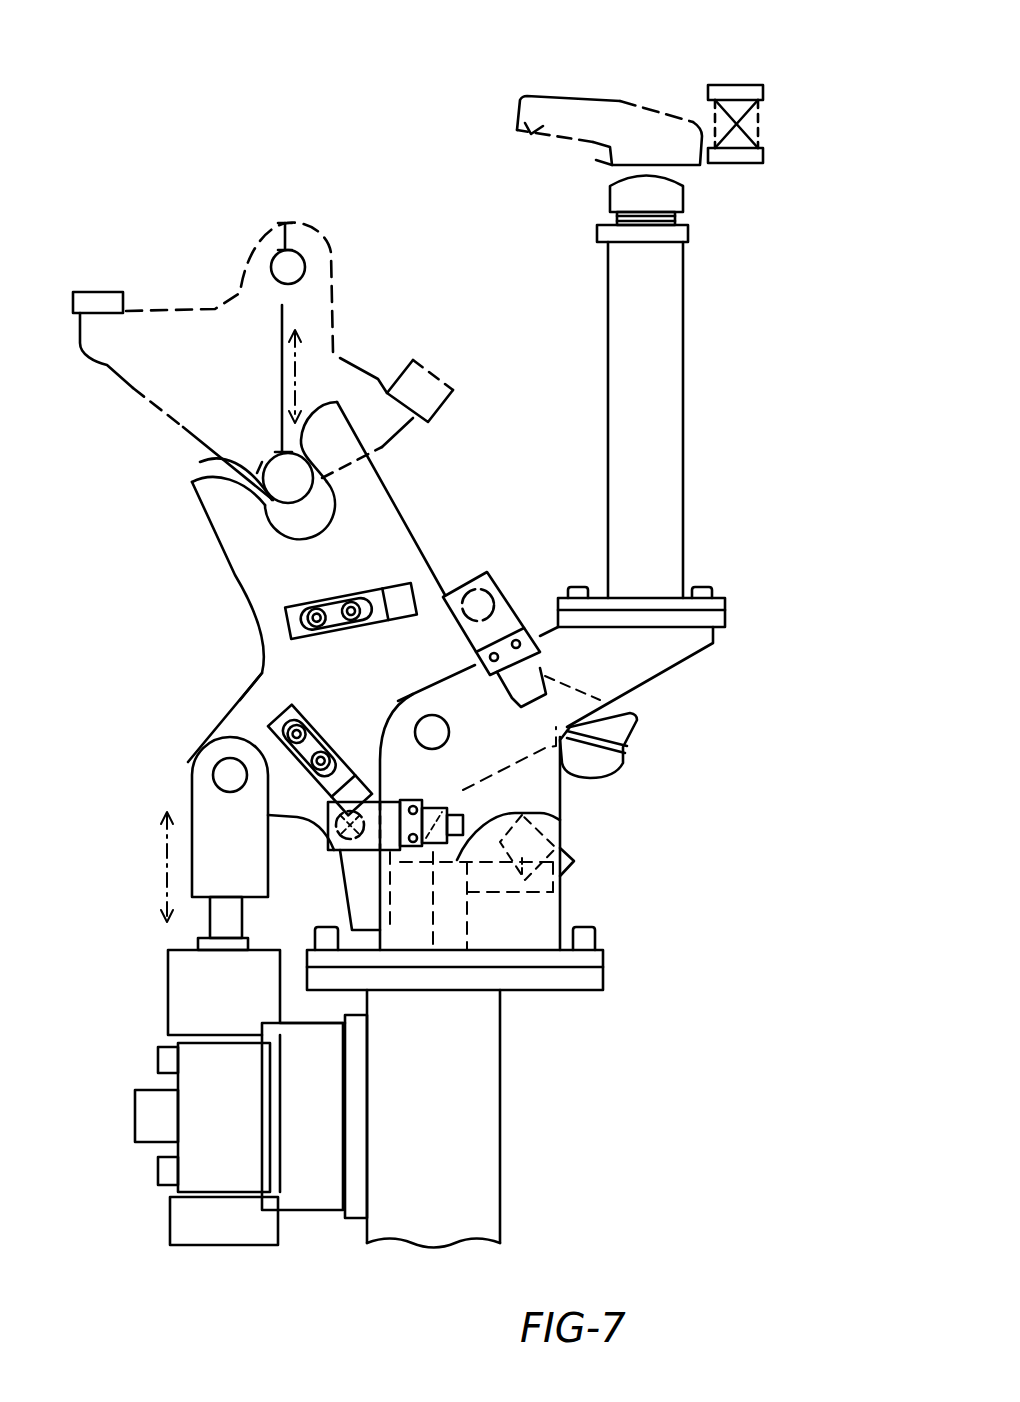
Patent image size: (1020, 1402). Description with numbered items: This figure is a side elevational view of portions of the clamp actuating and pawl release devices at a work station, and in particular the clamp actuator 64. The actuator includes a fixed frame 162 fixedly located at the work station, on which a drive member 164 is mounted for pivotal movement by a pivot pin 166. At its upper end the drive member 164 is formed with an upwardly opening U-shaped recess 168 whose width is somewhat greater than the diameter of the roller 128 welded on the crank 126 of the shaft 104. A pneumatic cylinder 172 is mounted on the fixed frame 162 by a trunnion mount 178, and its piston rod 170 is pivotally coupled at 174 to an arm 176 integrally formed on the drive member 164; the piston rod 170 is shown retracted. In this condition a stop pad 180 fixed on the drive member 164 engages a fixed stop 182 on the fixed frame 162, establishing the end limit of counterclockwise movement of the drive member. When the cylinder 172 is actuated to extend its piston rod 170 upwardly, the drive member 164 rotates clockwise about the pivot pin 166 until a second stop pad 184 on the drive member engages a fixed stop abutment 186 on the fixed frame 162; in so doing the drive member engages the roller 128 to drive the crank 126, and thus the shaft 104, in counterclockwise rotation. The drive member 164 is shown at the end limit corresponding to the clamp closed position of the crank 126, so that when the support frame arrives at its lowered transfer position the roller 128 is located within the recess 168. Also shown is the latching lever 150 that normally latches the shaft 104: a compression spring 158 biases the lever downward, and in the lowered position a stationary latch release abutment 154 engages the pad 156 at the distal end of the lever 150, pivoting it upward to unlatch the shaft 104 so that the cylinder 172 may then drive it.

The clamp actuator 64 is at (542, 1058).
The shaft 104 is at (285, 222).
The crank 126 is at (85, 368).
The roller 128 is at (273, 503).
The latching lever 150 is at (517, 132).
The latch release abutment 154 is at (682, 192).
The pad 156 is at (601, 158).
The compression spring 158 is at (760, 124).
The fixed frame 162 is at (483, 1197).
The drive member 164 is at (226, 523).
The pivot pin 166 is at (420, 713).
The U-shaped recess 168 is at (200, 462).
The piston rod 170 is at (208, 923).
The pneumatic cylinder 172 is at (170, 1190).
The pivotal coupling 174 is at (223, 768).
The arm 176 is at (262, 690).
The trunnion mount 178 is at (311, 1200).
The stop pad 180 is at (433, 877).
The fixed stop 182 is at (560, 820).
The second stop pad 184 is at (601, 780).
The fixed stop abutment 186 is at (575, 861).